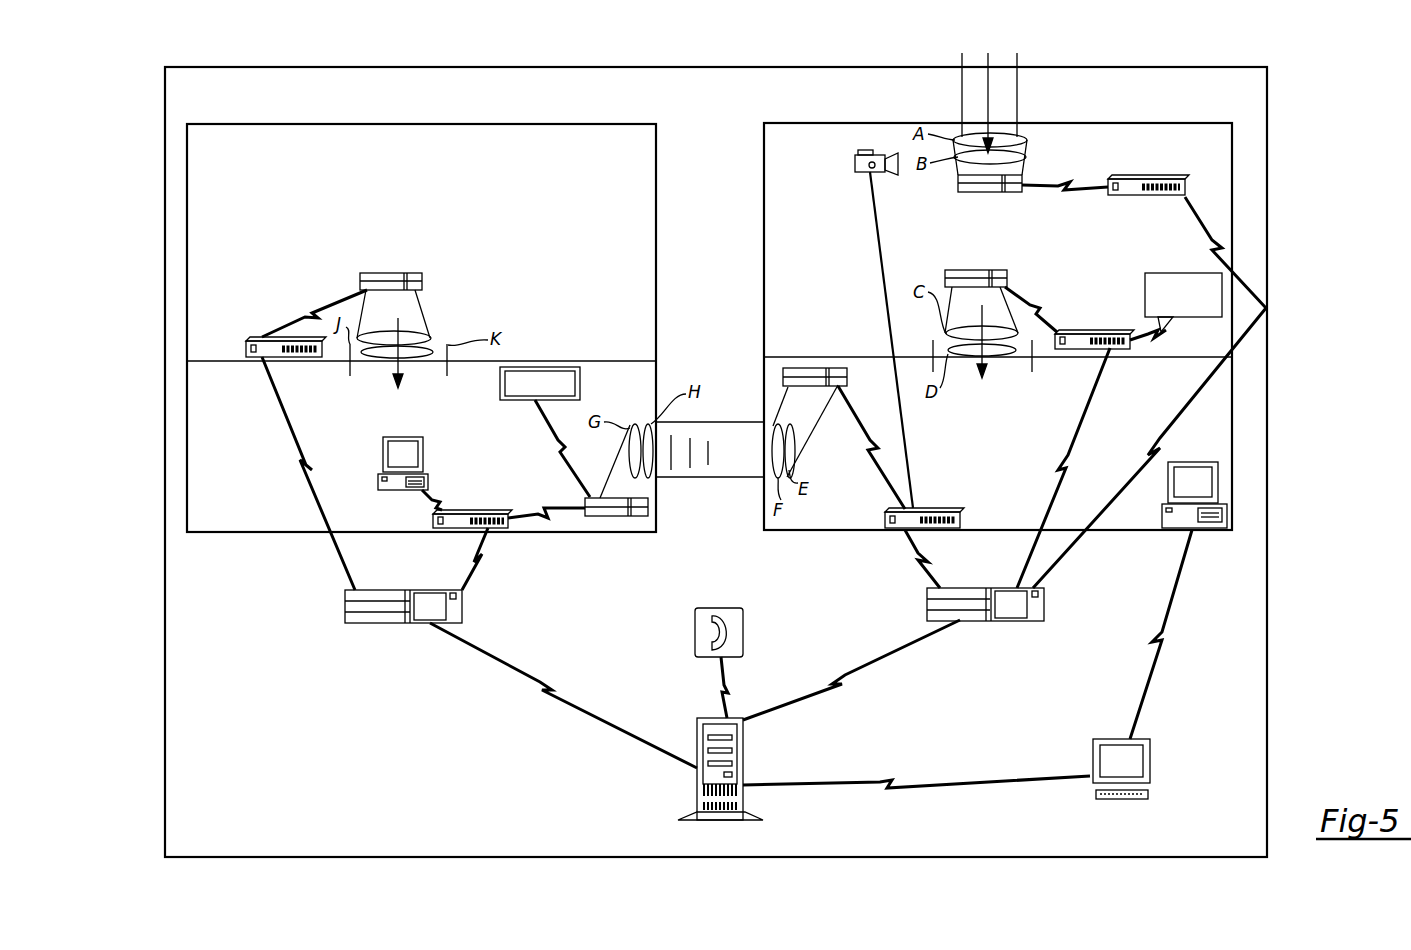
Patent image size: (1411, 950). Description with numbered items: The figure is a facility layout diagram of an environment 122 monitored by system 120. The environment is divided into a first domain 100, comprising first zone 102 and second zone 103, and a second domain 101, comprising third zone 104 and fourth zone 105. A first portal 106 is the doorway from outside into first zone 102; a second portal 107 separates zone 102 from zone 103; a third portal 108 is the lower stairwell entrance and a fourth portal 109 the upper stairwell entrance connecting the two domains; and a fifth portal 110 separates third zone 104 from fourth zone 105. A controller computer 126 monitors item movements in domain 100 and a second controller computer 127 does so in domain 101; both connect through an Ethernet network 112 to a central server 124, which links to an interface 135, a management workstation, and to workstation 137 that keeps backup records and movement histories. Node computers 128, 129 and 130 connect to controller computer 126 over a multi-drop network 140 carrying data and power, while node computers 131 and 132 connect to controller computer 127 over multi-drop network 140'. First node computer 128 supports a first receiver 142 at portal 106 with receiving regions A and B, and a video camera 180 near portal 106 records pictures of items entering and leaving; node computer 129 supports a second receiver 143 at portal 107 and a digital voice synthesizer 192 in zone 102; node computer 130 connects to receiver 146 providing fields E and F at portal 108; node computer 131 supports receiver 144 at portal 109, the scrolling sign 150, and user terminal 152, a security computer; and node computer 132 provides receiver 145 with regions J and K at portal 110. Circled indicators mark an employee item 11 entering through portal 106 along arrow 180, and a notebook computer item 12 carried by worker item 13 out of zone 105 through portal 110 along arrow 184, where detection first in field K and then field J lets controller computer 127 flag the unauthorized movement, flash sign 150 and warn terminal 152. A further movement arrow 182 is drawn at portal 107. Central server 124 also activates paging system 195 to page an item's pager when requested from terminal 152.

The item I1 11 is at (988, 33).
The item I2 12 is at (362, 247).
The item I3 13 is at (400, 247).
The first domain 100 is at (756, 135).
The second domain 101 is at (662, 156).
The first zone 102 is at (775, 254).
The second zone 103 is at (822, 525).
The third zone 104 is at (208, 449).
The fourth zone 105 is at (205, 210).
The first portal 106 is at (1017, 60).
The second portal 107 is at (932, 342).
The third portal 108 is at (768, 424).
The fourth portal 109 is at (645, 424).
The fifth portal 110 is at (448, 377).
The Ethernet network 112 is at (548, 688).
The system 120 is at (330, 738).
The environment 122 is at (336, 64).
The central server 124 is at (743, 750).
The controller computer 126 is at (1043, 605).
The second controller computer 127 is at (462, 610).
The first node computer 128 is at (1150, 176).
The node computer 129 is at (1097, 330).
The third node computer 130 is at (942, 508).
The fourth node computer 131 is at (508, 525).
The fifth node computer 132 is at (247, 344).
The interface 135 is at (1150, 768).
The workstation 137 is at (1168, 480).
The multi-drop network 140 is at (1085, 392).
The multi-drop network 140' is at (406, 474).
The first receiver 142 is at (985, 193).
The second receiver 143 is at (1007, 276).
The receiver 144 is at (649, 508).
The receiver 145 is at (422, 280).
The receiver 146 is at (847, 378).
The digital scrolling sign 150 is at (581, 380).
The user terminal 152 is at (425, 447).
The video camera 180 is at (866, 155).
The sensing field 182 is at (982, 330).
The arrow 184 is at (400, 322).
The digital voice synthesizer 192 is at (1172, 273).
The paging system 195 is at (743, 634).